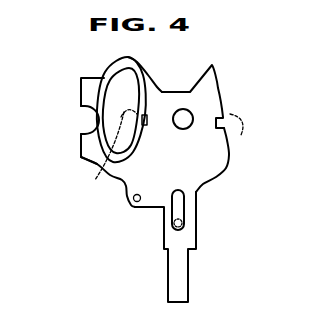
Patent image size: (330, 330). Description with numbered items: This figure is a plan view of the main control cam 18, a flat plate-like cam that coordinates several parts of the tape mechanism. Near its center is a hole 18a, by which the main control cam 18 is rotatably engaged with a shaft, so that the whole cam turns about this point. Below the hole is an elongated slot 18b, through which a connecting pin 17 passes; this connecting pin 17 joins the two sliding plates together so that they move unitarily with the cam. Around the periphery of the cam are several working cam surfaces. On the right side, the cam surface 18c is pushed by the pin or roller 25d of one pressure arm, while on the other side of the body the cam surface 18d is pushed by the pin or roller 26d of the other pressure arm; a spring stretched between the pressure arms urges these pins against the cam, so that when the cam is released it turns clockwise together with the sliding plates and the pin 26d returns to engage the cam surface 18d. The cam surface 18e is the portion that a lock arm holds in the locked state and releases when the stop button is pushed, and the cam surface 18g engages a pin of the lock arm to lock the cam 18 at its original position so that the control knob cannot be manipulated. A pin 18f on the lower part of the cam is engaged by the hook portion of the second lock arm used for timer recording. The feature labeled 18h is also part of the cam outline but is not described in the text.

The connecting pin 17 is at (184, 227).
The main control cam 18 is at (188, 283).
The hole 18a is at (179, 130).
The slot 18b is at (184, 208).
The cam surface 18c is at (222, 127).
The cam surface 18d is at (140, 80).
The cam surface 18e is at (100, 78).
The cam surface 18g is at (81, 115).
The lower lobe 18h is at (88, 165).
The pin 18f is at (138, 203).
The pin 25d is at (226, 114).
The pin 26d is at (107, 160).